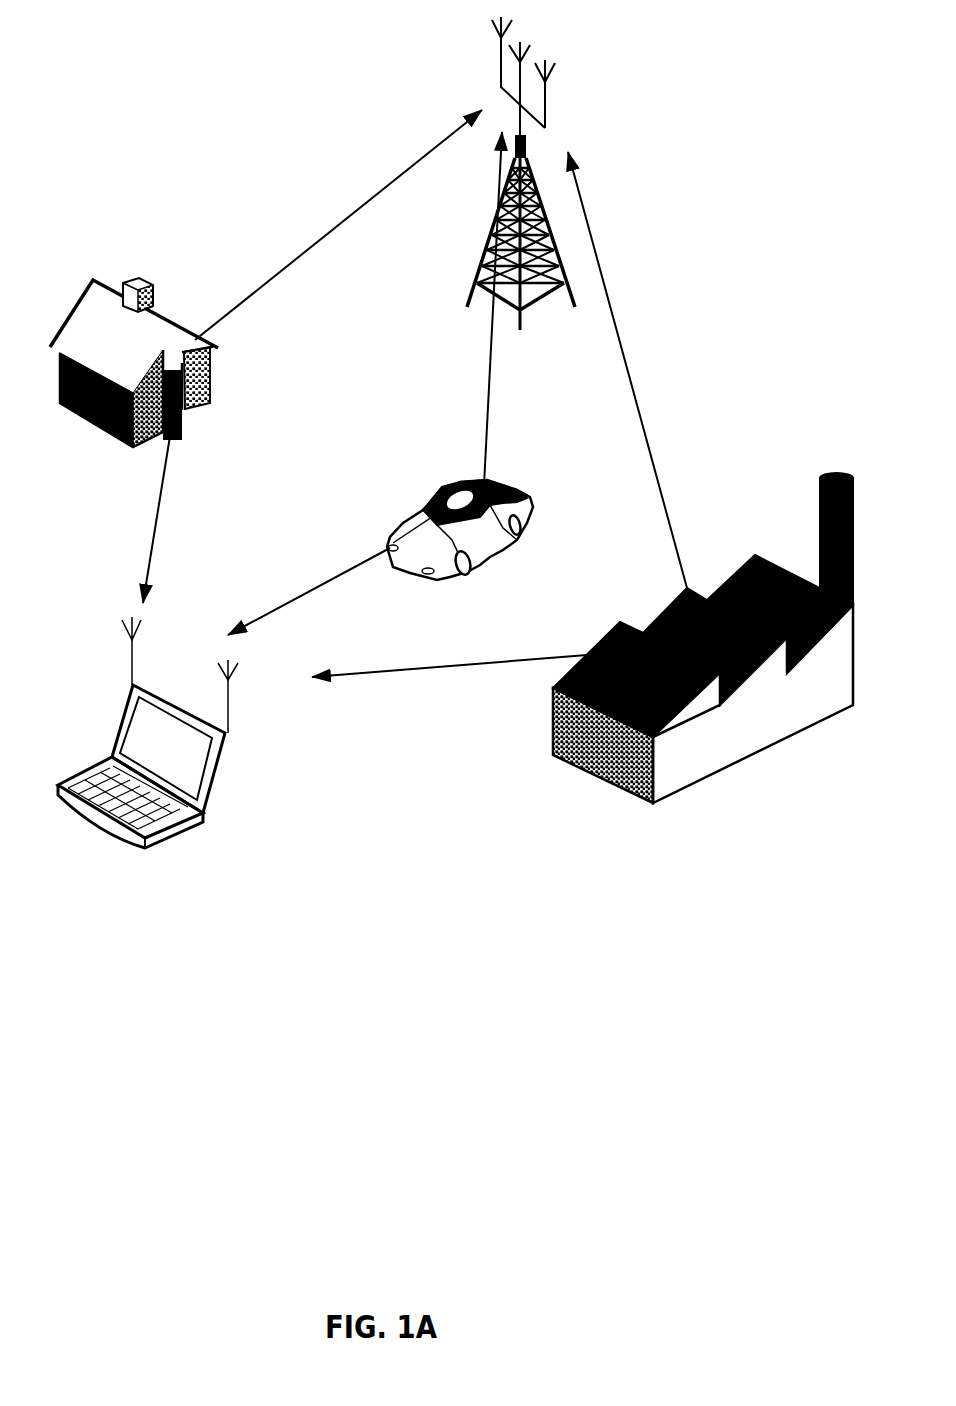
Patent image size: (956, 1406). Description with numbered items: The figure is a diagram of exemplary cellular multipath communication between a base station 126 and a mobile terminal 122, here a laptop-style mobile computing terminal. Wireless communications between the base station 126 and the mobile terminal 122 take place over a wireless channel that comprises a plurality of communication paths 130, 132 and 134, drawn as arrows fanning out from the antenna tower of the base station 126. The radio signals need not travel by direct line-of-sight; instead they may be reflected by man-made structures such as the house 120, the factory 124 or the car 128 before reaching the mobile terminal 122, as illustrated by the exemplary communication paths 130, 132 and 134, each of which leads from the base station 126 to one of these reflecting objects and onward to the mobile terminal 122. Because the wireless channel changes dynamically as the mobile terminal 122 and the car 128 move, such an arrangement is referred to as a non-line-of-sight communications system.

The house 120 is at (93, 283).
The mobile terminal 122 is at (220, 757).
The factory 124 is at (672, 793).
The base station 126 is at (520, 330).
The car 128 is at (467, 573).
The communication path 130 is at (272, 280).
The communication path 132 is at (487, 430).
The communication path 134 is at (635, 402).